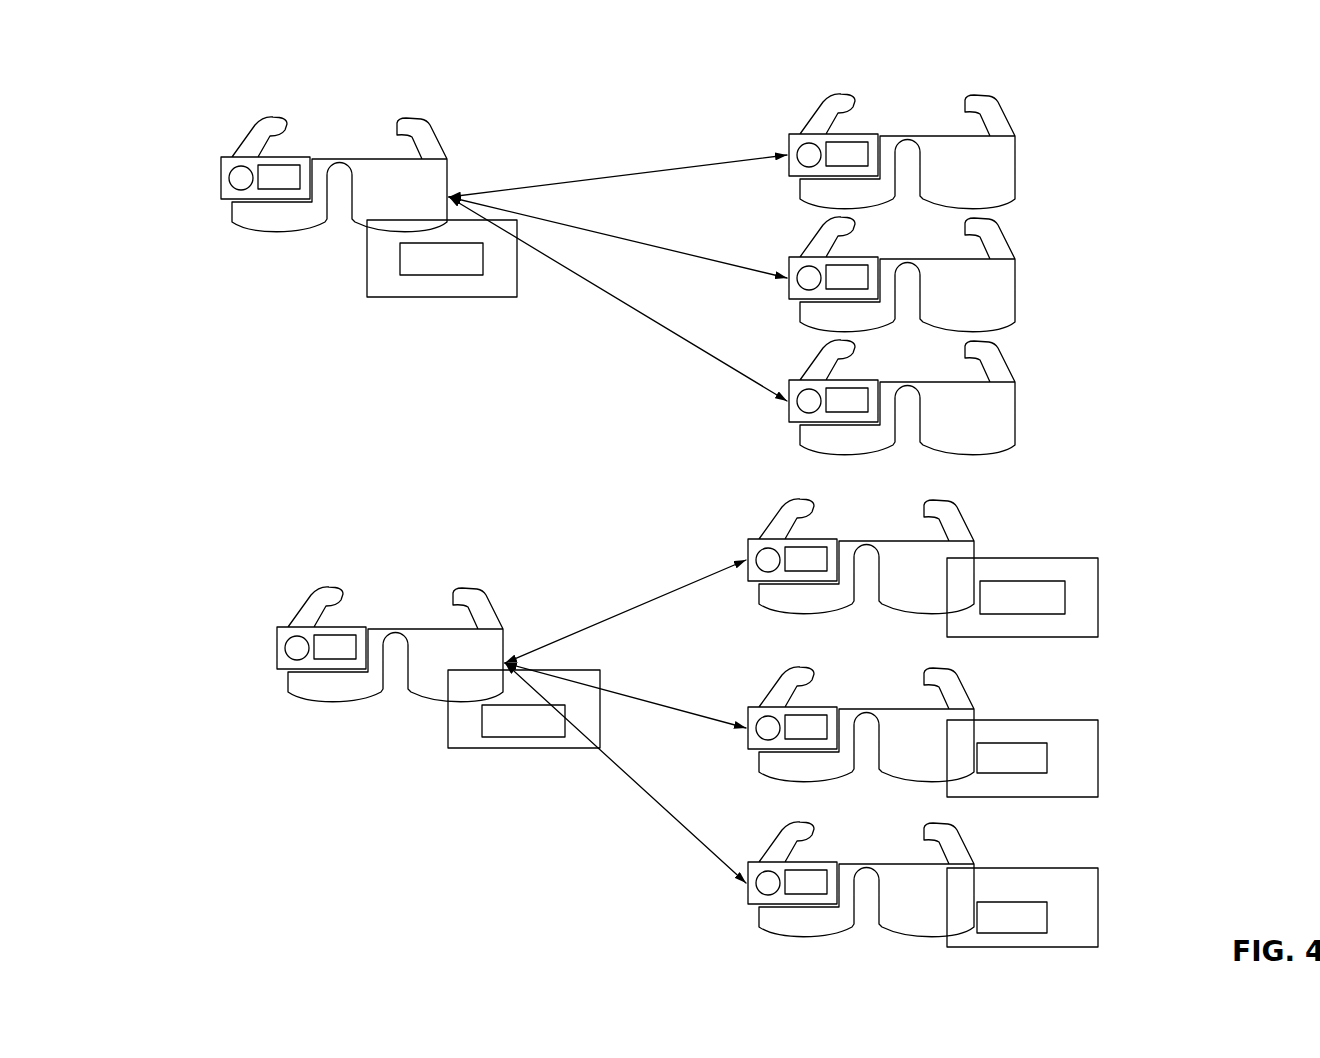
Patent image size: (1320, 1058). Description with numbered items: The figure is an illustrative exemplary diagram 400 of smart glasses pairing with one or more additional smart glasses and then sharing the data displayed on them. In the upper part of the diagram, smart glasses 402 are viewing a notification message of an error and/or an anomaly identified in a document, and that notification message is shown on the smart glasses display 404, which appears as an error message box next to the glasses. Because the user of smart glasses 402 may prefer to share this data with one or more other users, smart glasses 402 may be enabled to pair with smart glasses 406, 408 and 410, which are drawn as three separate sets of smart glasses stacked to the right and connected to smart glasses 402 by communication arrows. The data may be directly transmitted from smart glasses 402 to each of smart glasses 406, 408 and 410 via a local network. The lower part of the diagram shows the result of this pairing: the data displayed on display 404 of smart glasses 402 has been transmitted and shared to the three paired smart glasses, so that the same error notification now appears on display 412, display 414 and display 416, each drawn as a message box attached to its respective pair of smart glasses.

The illustrative exemplary diagram 400 is at (180, 76).
The smart glasses 402 is at (334, 124).
The smart glasses display 404 is at (464, 282).
The smart glasses 406 is at (1017, 167).
The smart glasses 408 is at (1017, 290).
The smart glasses 410 is at (1017, 418).
The display 412 is at (1080, 607).
The display 414 is at (1078, 772).
The display 416 is at (1078, 916).